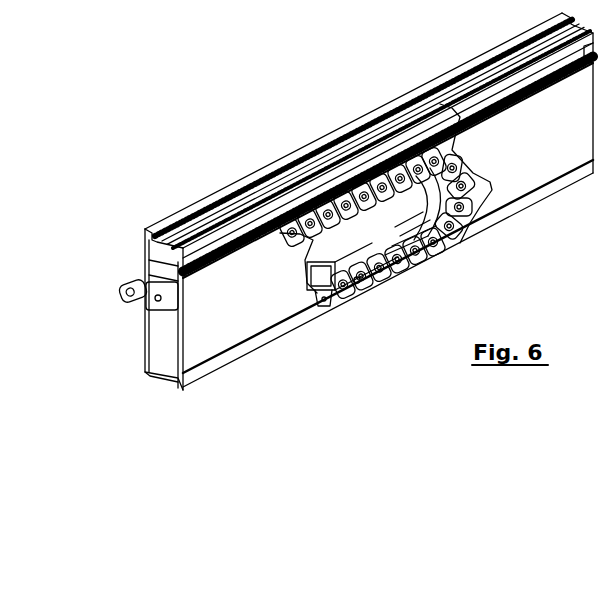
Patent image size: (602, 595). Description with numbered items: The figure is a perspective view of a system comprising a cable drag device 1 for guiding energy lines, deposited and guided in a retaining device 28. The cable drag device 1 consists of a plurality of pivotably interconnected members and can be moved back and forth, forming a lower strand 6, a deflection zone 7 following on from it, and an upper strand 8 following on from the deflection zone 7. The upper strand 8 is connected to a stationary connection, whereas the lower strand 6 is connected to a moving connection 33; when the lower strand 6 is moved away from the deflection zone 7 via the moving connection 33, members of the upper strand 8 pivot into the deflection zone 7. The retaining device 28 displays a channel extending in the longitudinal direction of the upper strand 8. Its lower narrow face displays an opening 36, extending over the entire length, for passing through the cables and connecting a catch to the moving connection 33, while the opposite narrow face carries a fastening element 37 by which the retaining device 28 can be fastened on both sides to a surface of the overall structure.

The fastening element 37 is at (143, 229).
The retaining device 28 is at (235, 365).
The opening 36 is at (163, 378).
The moving connection 33 is at (345, 290).
The lower strand 6 is at (411, 238).
The upper strand 8 is at (349, 218).
The deflection zone 7 is at (472, 183).
The cable drag device 1 is at (476, 210).